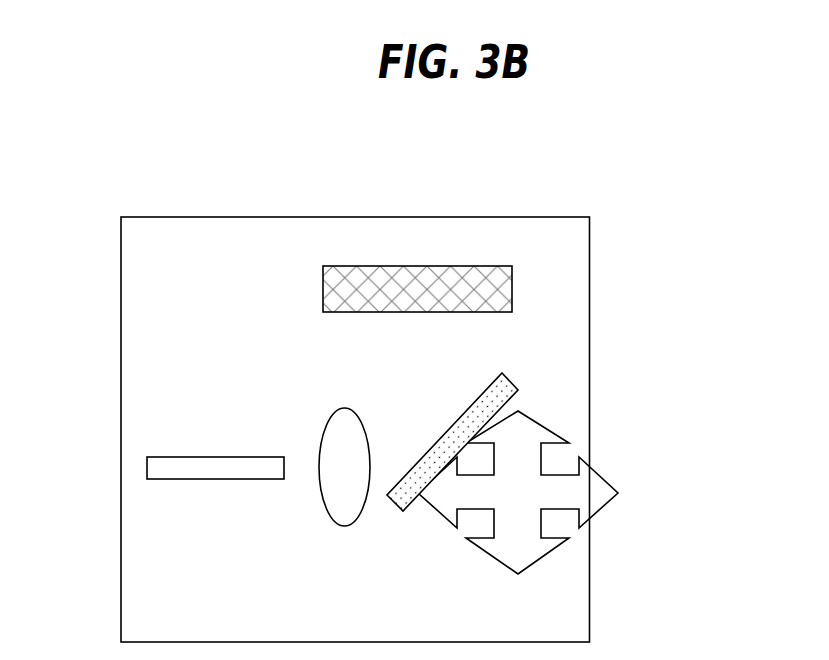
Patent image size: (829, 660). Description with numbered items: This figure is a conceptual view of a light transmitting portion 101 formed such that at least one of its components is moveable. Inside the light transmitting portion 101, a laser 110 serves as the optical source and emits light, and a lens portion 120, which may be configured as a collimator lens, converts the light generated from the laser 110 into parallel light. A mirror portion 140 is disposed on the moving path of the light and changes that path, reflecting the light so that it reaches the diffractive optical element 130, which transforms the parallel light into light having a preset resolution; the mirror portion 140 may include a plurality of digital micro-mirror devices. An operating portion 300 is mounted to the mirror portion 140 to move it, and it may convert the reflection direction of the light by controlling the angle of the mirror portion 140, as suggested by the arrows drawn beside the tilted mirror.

The light transmitting portion 101 is at (612, 592).
The laser 110 is at (156, 466).
The lens portion 120 is at (339, 422).
The diffractive optical element 130 is at (337, 287).
The mirror portion 140 is at (510, 385).
The operating portion 300 is at (587, 476).